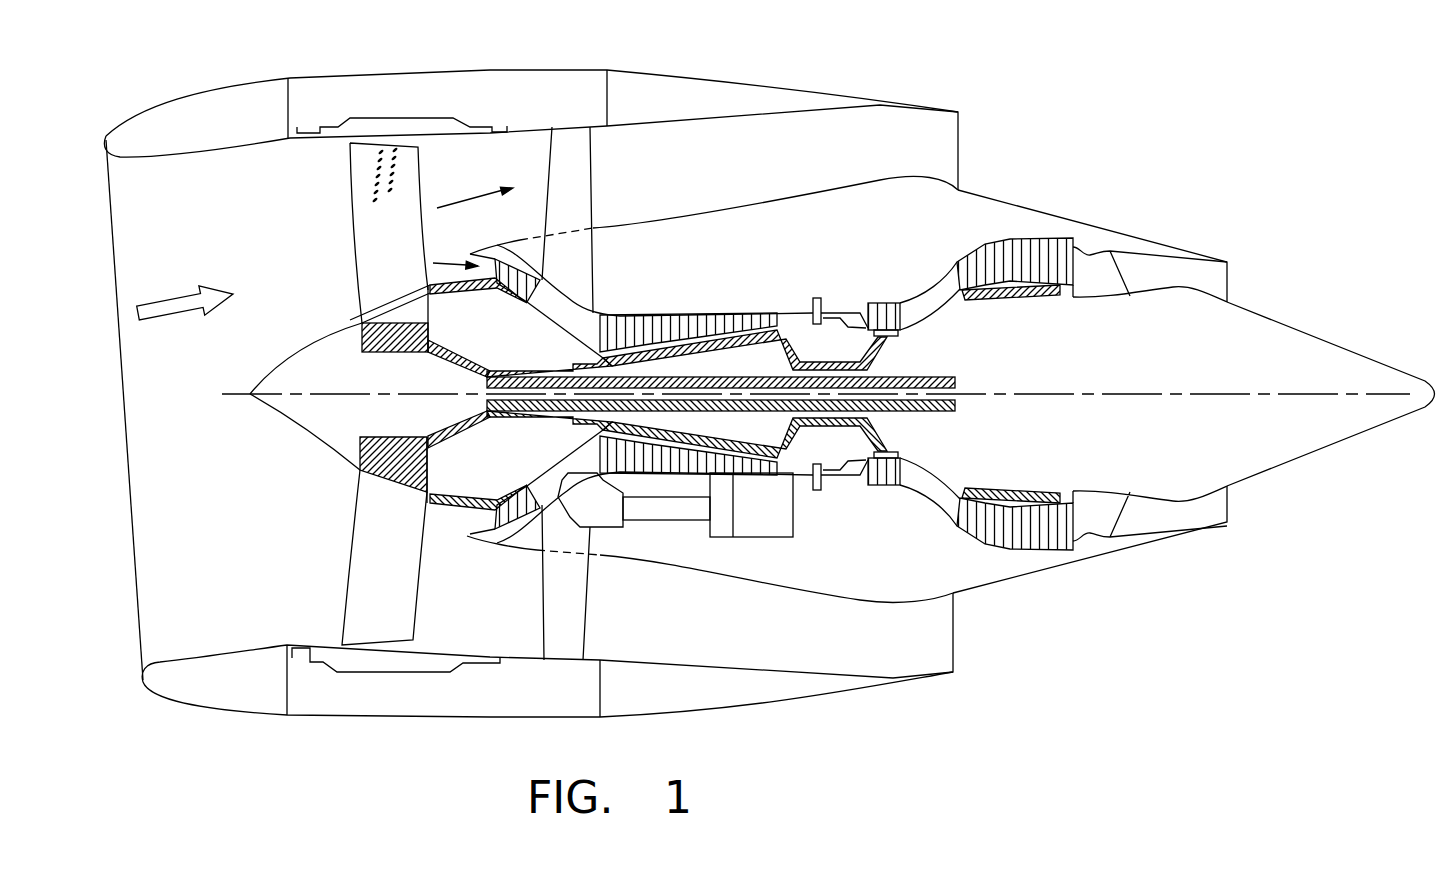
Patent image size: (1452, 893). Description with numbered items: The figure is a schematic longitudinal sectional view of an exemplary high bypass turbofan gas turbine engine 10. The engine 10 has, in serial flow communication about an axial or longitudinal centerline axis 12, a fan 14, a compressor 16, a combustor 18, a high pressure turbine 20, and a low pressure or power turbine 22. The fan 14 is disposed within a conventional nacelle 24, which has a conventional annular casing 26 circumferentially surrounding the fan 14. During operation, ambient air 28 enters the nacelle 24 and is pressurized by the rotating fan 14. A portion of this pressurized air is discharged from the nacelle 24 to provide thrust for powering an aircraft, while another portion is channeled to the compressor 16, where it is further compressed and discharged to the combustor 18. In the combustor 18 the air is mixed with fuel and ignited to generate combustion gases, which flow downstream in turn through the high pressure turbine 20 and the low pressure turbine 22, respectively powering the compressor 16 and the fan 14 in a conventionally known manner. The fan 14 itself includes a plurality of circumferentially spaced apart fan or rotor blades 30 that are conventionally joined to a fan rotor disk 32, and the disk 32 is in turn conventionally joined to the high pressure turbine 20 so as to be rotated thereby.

The turbofan gas turbine engine 10 is at (960, 92).
The longitudinal centerline axis 12 is at (1123, 390).
The fan 14 is at (352, 233).
The compressor 16 is at (680, 313).
The combustor 18 is at (838, 312).
The high pressure turbine 20 is at (887, 297).
The low pressure turbine 22 is at (1047, 237).
The nacelle 24 is at (513, 68).
The annular casing 26 is at (390, 115).
The ambient air 28 is at (183, 293).
The fan blades 30 is at (357, 280).
The fan rotor disk 32 is at (362, 340).